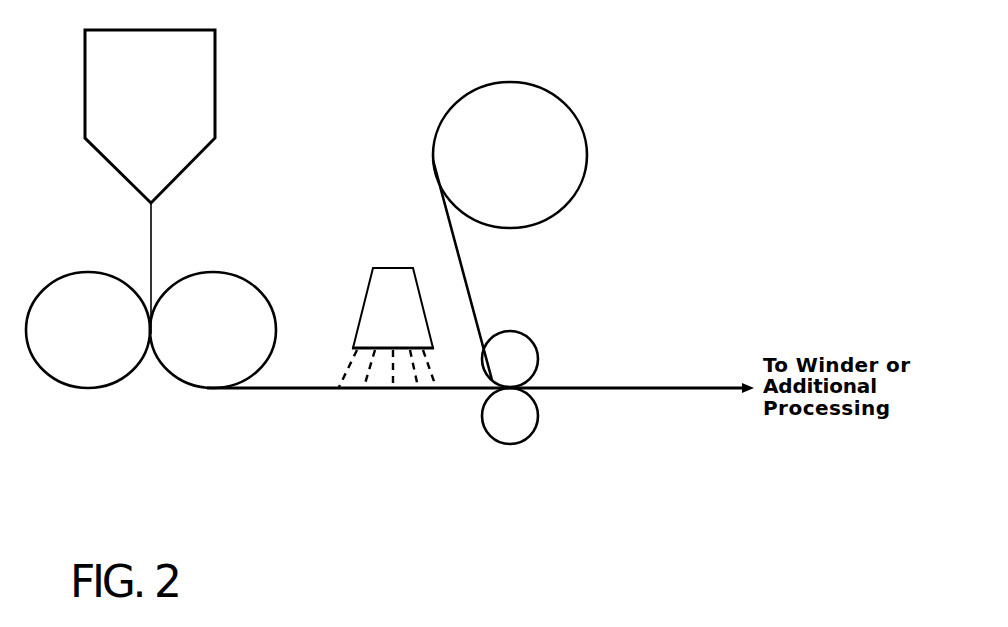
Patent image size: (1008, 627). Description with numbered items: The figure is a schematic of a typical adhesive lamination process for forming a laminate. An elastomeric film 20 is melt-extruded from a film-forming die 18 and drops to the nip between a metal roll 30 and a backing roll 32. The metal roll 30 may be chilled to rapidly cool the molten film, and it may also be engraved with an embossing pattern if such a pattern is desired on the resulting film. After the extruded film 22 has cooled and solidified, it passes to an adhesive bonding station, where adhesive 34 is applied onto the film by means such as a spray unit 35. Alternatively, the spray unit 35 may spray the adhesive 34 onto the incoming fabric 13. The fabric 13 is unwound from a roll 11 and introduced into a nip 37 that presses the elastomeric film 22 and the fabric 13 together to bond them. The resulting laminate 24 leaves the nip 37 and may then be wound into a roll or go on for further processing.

The roll 11 is at (539, 140).
The fabric 13 is at (470, 282).
The film-forming die 18 is at (167, 145).
The elastomeric film 20 is at (157, 243).
The extruded film 22 is at (280, 395).
The laminate 24 is at (650, 398).
The metal roll 30 is at (246, 315).
The backing roll 32 is at (84, 306).
The adhesive 34 is at (424, 373).
The spray unit 35 is at (392, 296).
The nip 37 is at (507, 384).